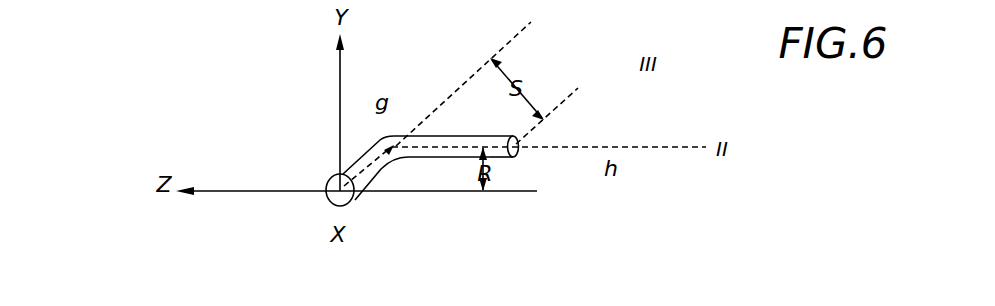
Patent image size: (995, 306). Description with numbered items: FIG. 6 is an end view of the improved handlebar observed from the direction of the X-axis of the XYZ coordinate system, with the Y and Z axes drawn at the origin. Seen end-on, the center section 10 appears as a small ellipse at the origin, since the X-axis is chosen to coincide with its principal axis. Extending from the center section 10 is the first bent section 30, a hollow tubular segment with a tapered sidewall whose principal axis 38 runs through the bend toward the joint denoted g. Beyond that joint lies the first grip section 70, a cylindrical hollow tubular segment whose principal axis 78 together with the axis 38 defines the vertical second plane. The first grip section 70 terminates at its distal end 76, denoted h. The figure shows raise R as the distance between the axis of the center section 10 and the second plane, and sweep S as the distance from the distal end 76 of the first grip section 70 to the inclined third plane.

The center section 10 is at (331, 194).
The first bent section 30 is at (389, 183).
The principal axis 38 is at (442, 146).
The first grip section 70 is at (513, 170).
The distal end 76 is at (518, 155).
The principal axis 78 is at (462, 157).